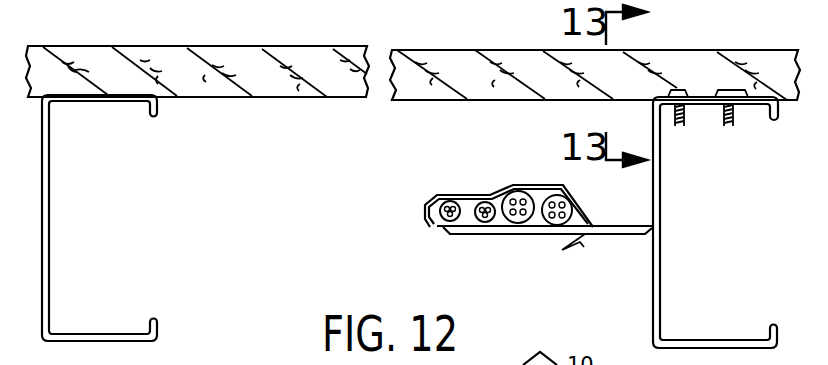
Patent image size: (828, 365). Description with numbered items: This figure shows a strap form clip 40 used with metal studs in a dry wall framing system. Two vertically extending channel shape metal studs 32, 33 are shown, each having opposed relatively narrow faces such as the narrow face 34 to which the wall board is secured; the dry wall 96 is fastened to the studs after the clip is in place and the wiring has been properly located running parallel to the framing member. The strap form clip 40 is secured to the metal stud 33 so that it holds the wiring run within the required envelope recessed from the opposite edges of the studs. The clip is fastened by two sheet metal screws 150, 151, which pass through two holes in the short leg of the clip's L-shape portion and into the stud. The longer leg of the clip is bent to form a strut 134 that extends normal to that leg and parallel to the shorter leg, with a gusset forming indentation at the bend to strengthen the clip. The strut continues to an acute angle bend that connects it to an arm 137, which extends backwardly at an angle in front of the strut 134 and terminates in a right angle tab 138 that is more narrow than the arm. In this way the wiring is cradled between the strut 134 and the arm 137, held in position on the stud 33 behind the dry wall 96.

The dry wall 96 is at (312, 49).
The narrow face 34 is at (758, 100).
The metal stud 32 is at (46, 206).
The metal stud 33 is at (644, 300).
The sheet metal screw 150 is at (680, 126).
The sheet metal screw 151 is at (728, 126).
The strut 134 is at (554, 234).
The right angle tab 138 is at (572, 252).
The strap form clip 40 is at (524, 255).
The arm 137 is at (497, 193).